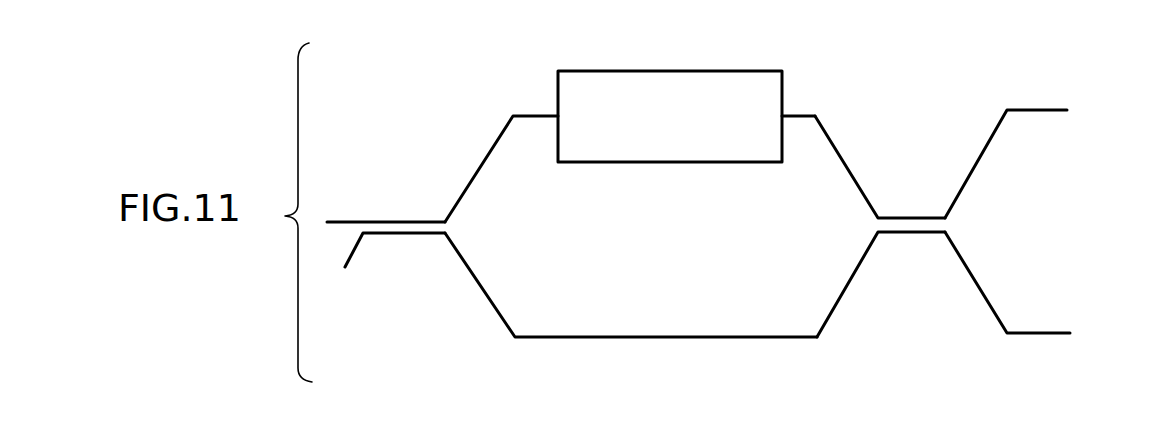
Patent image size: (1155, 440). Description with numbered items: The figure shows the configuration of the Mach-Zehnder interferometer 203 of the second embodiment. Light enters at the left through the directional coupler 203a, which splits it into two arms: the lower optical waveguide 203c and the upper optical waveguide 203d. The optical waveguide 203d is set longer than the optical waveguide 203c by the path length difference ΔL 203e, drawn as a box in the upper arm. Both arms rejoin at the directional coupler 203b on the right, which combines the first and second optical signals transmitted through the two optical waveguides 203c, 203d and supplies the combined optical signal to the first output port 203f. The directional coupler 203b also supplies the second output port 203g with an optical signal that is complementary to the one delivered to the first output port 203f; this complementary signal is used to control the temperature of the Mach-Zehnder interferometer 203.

The Mach-Zehnder interferometer 203 is at (438, 95).
The directional coupler 203a is at (405, 233).
The directional coupler 203b is at (922, 232).
The optical waveguide 203c is at (710, 337).
The optical waveguide 203d is at (532, 115).
The path length difference ΔL 203e is at (662, 71).
The first output port 203f is at (1035, 110).
The second output port 203g is at (1037, 333).